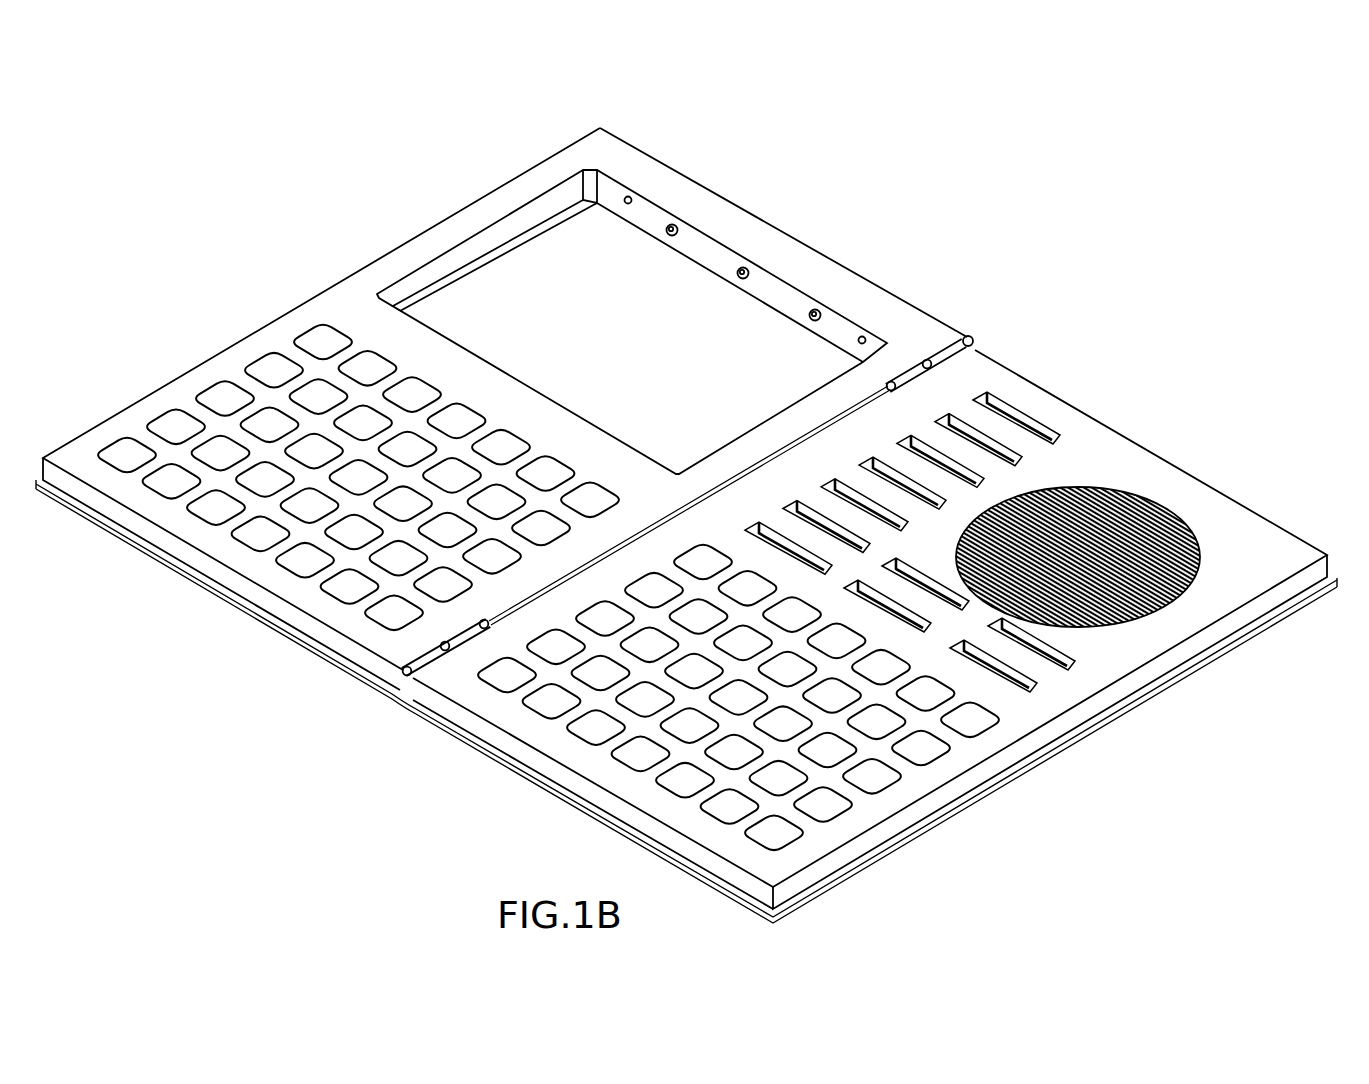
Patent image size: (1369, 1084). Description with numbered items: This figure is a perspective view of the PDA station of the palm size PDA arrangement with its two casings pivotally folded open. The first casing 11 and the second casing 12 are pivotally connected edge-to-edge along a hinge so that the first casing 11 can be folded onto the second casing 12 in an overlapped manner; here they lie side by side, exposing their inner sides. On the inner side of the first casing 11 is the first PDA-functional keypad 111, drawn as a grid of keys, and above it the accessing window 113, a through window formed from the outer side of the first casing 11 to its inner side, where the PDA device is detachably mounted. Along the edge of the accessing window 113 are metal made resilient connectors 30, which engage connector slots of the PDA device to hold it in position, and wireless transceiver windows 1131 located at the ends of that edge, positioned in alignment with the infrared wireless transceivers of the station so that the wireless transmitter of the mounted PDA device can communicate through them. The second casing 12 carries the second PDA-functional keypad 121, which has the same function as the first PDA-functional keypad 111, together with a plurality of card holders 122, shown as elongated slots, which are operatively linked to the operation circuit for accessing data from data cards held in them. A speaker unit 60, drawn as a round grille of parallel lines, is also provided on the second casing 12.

The first casing 11 is at (600, 145).
The accessing window 113 is at (612, 292).
The wireless transceiver windows 1131 is at (863, 337).
The resilient connectors 30 is at (827, 297).
The first PDA-functional keypad 111 is at (330, 348).
The second casing 12 is at (1130, 647).
The card holders 122 is at (1005, 410).
The speaker unit 60 is at (1130, 472).
The second PDA-functional keypad 121 is at (880, 787).